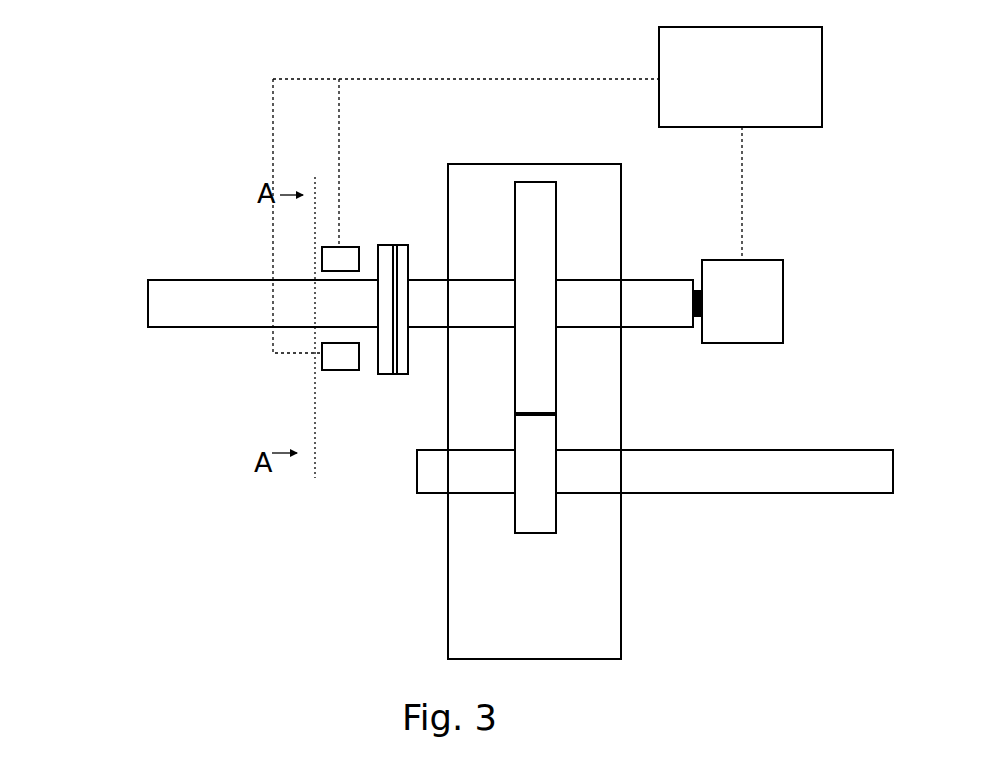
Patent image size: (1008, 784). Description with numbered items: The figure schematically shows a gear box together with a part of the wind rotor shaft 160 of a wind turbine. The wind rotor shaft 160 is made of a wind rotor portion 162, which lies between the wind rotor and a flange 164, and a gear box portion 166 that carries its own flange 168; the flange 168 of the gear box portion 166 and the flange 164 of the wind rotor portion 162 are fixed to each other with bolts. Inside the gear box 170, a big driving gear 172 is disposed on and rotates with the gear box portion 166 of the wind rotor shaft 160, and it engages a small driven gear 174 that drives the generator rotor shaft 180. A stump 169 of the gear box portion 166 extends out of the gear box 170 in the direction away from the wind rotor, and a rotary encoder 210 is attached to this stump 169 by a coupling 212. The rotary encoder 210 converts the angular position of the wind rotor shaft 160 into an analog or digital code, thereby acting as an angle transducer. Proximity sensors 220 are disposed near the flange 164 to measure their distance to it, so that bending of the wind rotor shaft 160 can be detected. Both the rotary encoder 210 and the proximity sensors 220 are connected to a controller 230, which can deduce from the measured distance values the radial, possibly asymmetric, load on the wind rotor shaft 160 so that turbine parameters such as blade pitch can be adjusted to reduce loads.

The wind rotor shaft 160 is at (248, 312).
The wind rotor portion 162 is at (158, 312).
The flange 164 is at (387, 360).
The gear box portion 166 is at (468, 303).
The flange 168 is at (408, 247).
The stump 169 is at (632, 317).
The gear box 170 is at (622, 230).
The big driving gear 172 is at (543, 188).
The small driven gear 174 is at (543, 513).
The generator rotor shaft 180 is at (767, 463).
The rotary encoder 210 is at (783, 297).
The coupling 212 is at (703, 315).
The proximity sensors 220 is at (323, 262).
The controller 230 is at (740, 77).